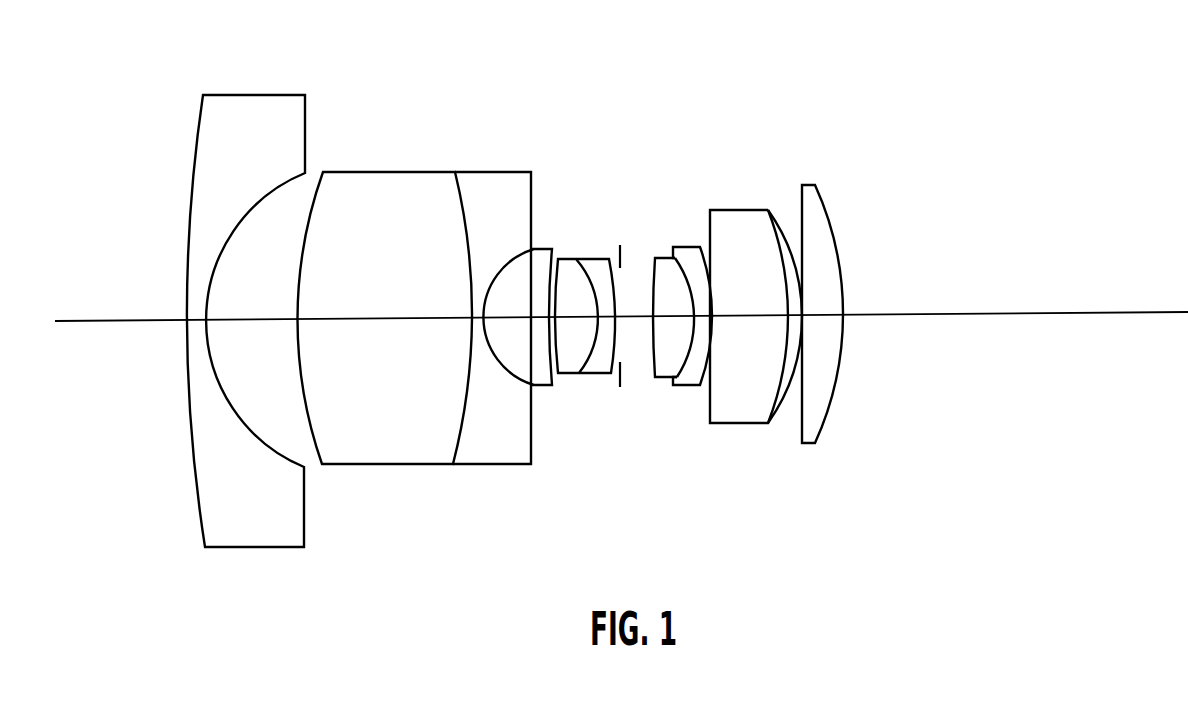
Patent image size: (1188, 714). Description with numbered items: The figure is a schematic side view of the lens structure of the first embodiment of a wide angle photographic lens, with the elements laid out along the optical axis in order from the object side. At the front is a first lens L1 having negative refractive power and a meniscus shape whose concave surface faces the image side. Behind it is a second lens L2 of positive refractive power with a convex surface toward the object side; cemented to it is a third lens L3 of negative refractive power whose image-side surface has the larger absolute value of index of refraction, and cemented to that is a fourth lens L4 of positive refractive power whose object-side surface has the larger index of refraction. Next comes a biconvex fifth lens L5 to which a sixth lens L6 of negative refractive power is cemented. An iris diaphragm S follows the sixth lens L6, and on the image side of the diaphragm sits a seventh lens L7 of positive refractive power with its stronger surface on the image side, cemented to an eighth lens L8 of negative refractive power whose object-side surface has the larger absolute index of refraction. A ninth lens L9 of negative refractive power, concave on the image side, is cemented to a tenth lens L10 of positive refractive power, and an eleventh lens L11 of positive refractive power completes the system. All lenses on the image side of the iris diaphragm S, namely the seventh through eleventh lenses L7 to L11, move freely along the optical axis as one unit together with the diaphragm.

The first lens L1 is at (246, 98).
The second lens L2 is at (385, 177).
The third lens L3 is at (497, 175).
The fourth lens L4 is at (537, 253).
The fifth lens L5 is at (568, 365).
The sixth lens L6 is at (588, 365).
The iris diaphragm S is at (618, 252).
The seventh lens L7 is at (663, 363).
The eighth lens L8 is at (690, 375).
The ninth lens L9 is at (730, 218).
The tenth lens L10 is at (767, 212).
The eleventh lens L11 is at (810, 437).